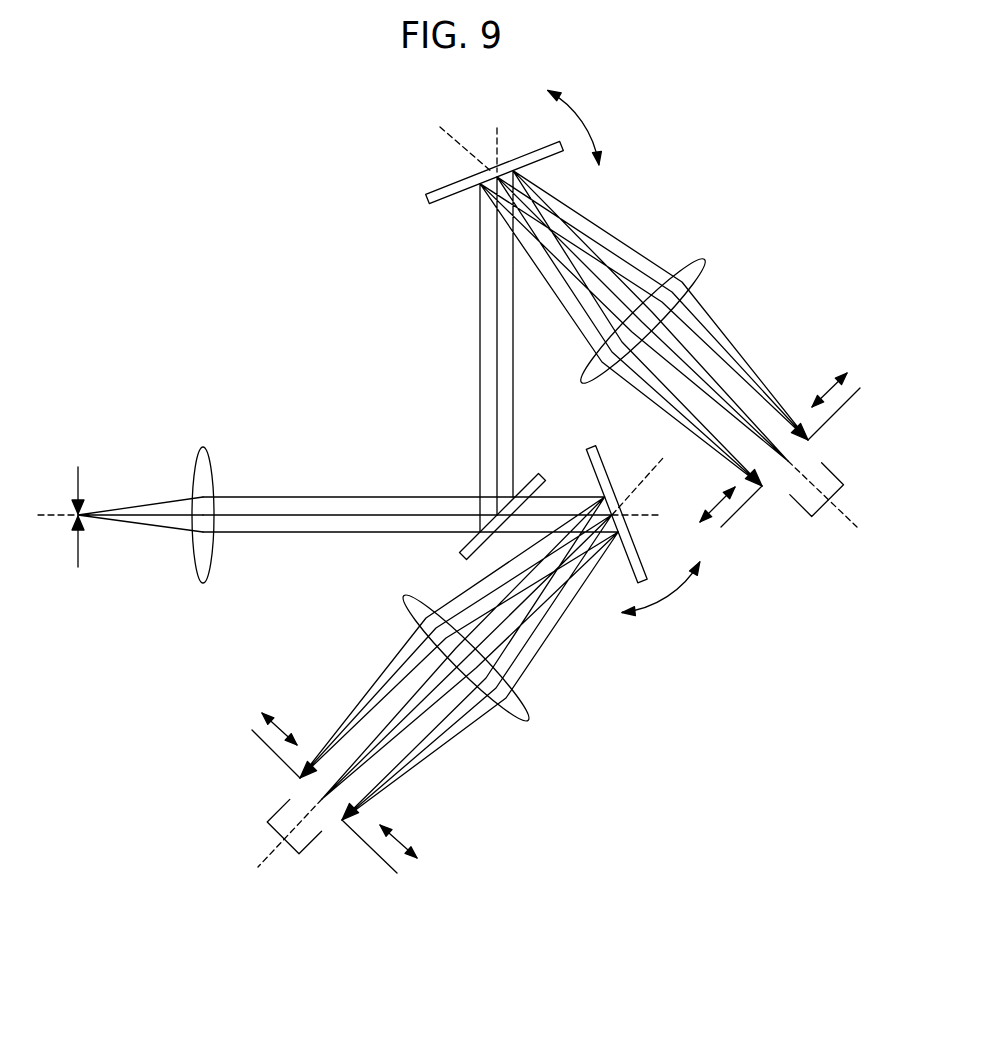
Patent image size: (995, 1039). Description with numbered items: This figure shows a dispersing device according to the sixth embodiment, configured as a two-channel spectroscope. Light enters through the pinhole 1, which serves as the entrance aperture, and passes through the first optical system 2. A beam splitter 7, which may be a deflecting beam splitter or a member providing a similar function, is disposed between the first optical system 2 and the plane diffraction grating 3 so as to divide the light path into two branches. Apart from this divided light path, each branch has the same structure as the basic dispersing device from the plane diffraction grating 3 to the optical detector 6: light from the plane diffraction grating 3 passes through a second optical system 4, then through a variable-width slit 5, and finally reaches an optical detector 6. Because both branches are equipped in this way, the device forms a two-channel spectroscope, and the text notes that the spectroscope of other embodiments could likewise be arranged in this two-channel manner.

The pinhole 1 is at (78, 497).
The first optical system 2 is at (213, 470).
The plane diffraction grating 3 is at (442, 180).
The second optical system 4 is at (677, 258).
The variable-width slit 5 is at (757, 500).
The optical detector 6 is at (820, 517).
The beam splitter 7 is at (462, 548).